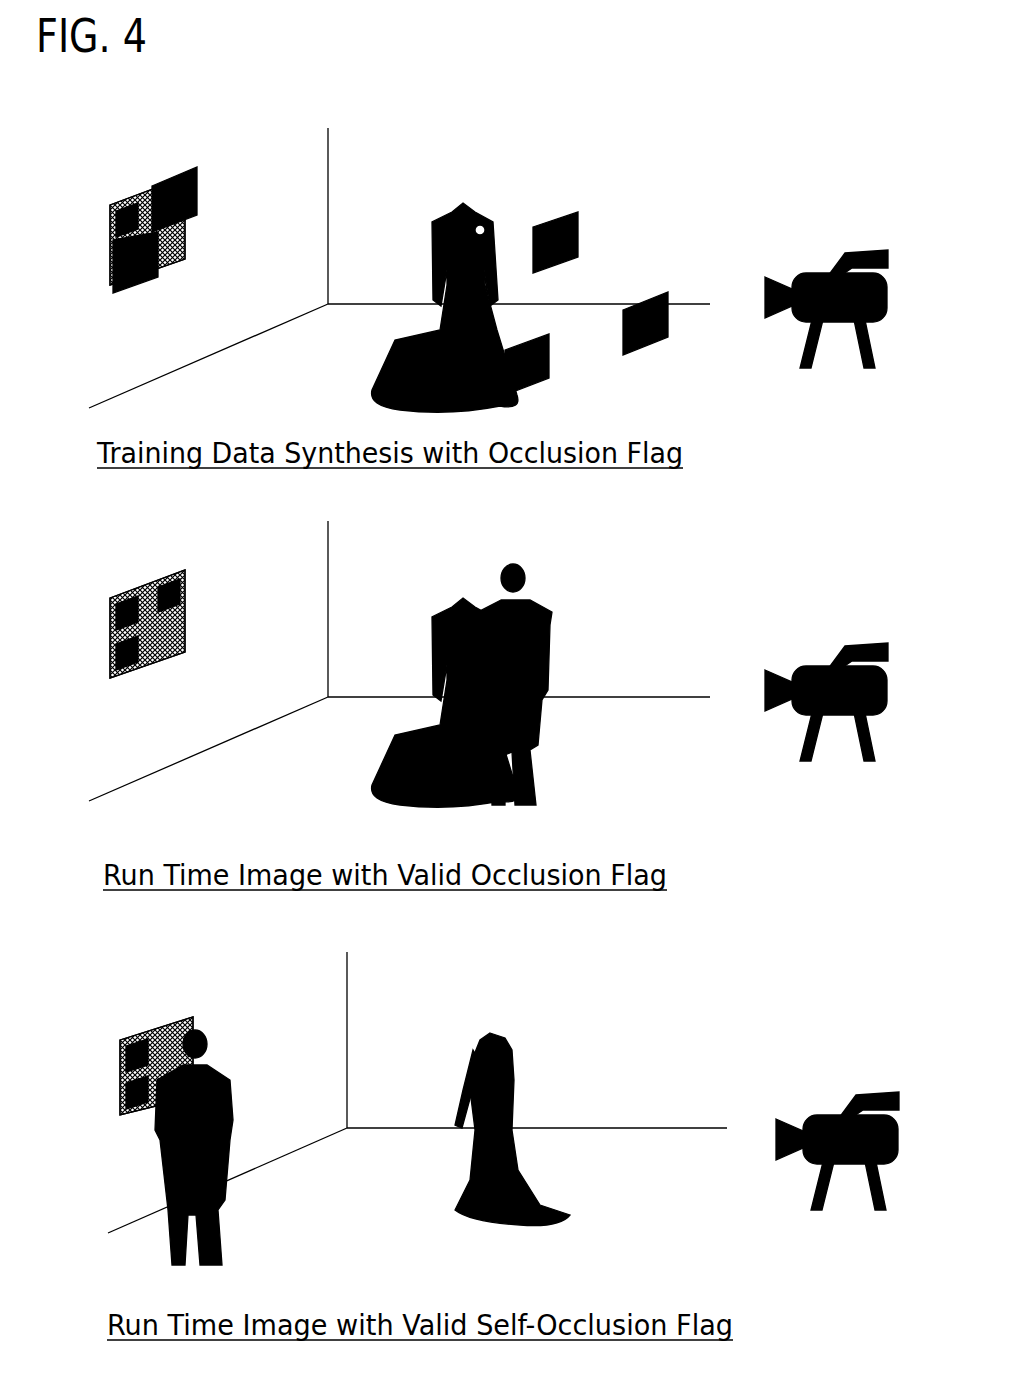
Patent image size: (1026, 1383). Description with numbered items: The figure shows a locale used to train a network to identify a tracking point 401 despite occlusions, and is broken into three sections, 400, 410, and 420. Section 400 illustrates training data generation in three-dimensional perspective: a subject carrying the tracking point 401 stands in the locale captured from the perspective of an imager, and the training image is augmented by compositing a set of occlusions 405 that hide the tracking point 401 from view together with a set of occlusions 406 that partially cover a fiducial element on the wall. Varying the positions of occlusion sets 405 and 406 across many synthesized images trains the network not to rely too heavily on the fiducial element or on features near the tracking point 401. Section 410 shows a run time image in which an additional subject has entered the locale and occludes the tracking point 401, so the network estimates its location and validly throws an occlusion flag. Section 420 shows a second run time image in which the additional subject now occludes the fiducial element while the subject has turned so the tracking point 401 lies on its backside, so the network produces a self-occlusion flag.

The training data generation section 400 is at (860, 166).
The tracking point 401 is at (480, 224).
The set of occlusions 405 is at (627, 207).
The set of occlusions over fiducial element 406 is at (212, 160).
The run time image section with occlusion flag 410 is at (856, 566).
The run time image section with self-occlusion flag 420 is at (865, 964).